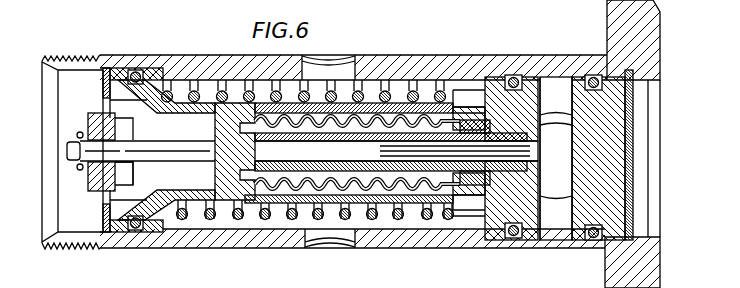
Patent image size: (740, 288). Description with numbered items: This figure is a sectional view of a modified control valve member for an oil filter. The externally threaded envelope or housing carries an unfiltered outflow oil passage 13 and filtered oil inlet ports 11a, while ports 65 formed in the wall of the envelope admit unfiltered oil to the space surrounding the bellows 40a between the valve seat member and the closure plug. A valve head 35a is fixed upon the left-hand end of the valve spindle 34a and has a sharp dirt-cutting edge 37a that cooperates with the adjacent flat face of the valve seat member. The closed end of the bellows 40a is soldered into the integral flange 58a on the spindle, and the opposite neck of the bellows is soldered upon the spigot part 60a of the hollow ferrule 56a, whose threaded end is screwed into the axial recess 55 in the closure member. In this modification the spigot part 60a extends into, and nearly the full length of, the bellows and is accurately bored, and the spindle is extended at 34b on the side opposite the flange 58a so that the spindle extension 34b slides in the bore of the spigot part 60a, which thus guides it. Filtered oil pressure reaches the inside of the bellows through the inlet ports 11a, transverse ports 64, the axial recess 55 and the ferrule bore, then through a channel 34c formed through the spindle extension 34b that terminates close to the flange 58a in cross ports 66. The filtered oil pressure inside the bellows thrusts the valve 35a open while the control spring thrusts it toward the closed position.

The filtered oil inlet ports 11a is at (548, 241).
The unfiltered outflow oil passage 13 is at (82, 113).
The valve spindle 34a is at (158, 149).
The spindle extension 34b is at (400, 174).
The channel 34c is at (293, 155).
The valve head 35a is at (97, 192).
The dirt-cutting edge 37a is at (135, 177).
The bellows 40a is at (364, 187).
The axial recess 55 is at (586, 158).
The hollow ferrule 56a is at (468, 190).
The integral flange 58a is at (229, 225).
The spigot part 60a is at (372, 132).
The transverse ports 64 is at (547, 180).
The ports 65 is at (330, 236).
The cross ports 66 is at (250, 112).